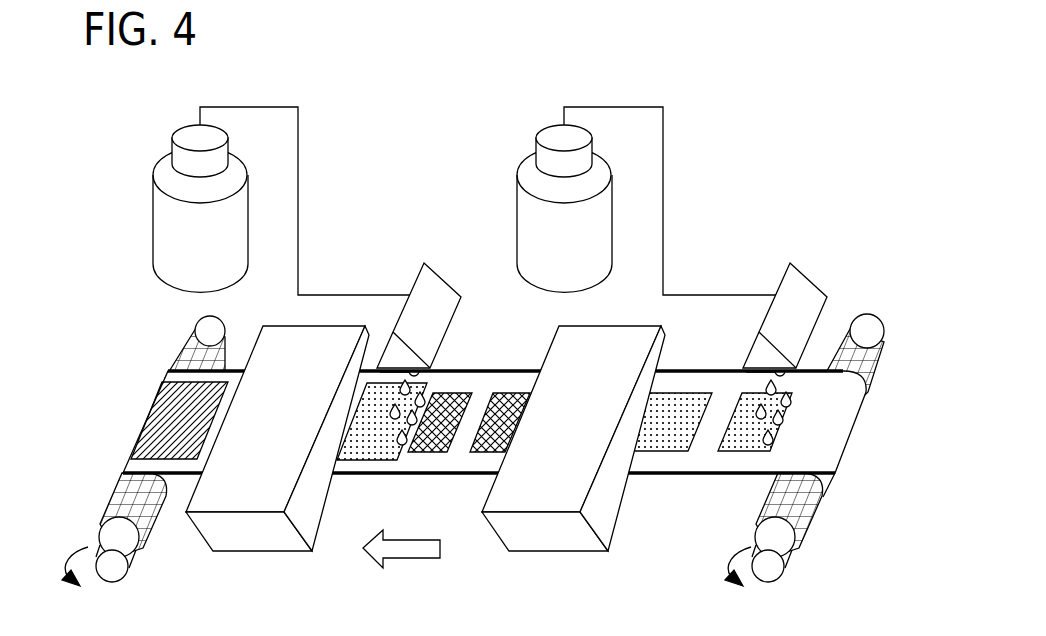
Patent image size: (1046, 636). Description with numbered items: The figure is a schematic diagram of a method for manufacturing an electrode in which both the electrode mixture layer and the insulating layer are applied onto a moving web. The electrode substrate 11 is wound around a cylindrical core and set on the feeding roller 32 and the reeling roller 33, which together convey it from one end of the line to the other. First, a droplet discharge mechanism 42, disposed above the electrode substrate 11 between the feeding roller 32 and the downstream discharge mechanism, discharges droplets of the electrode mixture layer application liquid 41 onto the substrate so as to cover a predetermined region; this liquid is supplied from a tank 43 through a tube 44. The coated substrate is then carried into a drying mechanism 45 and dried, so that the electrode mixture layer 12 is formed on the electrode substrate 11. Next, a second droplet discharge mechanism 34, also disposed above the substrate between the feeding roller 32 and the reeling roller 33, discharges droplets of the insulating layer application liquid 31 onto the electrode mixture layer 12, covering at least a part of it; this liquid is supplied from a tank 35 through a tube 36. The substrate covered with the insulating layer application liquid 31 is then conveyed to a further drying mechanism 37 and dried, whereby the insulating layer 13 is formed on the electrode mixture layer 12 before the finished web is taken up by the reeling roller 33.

The electrode substrate 11 is at (482, 402).
The electrode mixture layer 12 is at (483, 449).
The insulating layer 13 is at (158, 417).
The insulating layer application liquid 31 is at (372, 450).
The feeding roller 32 is at (814, 519).
The reeling roller 33 is at (108, 500).
The droplet discharge mechanism 34 is at (431, 286).
The tank 35 is at (162, 214).
The tube 36 is at (298, 151).
The drying mechanism 37 is at (262, 532).
The electrode mixture layer application liquid 41 is at (743, 443).
The droplet discharge mechanism 42 is at (797, 286).
The tank 43 is at (526, 214).
The tube 44 is at (663, 151).
The drying mechanism 45 is at (553, 533).